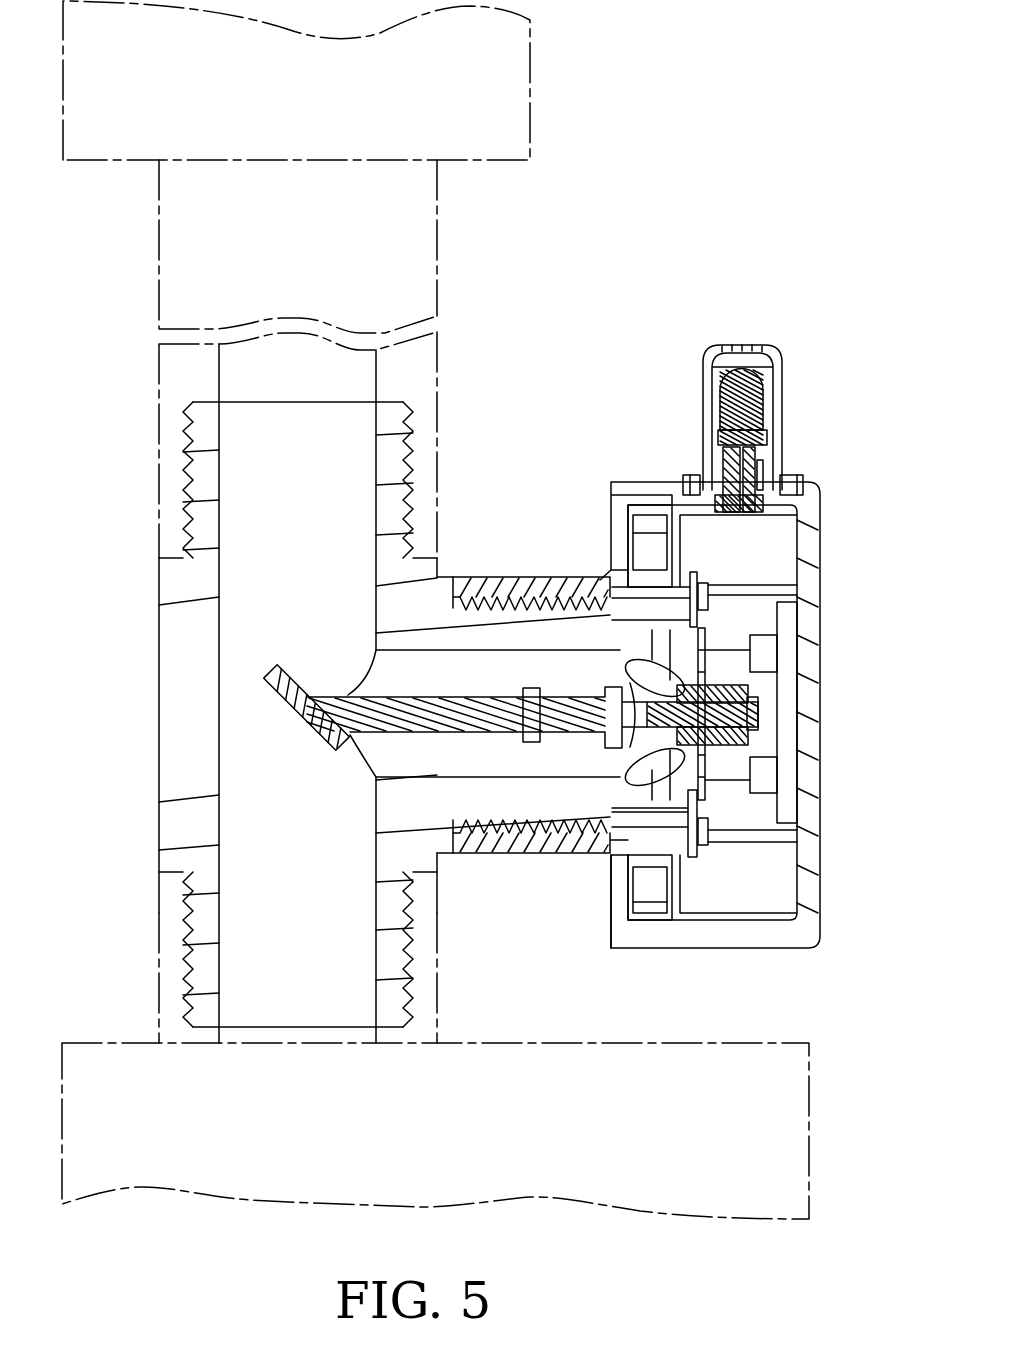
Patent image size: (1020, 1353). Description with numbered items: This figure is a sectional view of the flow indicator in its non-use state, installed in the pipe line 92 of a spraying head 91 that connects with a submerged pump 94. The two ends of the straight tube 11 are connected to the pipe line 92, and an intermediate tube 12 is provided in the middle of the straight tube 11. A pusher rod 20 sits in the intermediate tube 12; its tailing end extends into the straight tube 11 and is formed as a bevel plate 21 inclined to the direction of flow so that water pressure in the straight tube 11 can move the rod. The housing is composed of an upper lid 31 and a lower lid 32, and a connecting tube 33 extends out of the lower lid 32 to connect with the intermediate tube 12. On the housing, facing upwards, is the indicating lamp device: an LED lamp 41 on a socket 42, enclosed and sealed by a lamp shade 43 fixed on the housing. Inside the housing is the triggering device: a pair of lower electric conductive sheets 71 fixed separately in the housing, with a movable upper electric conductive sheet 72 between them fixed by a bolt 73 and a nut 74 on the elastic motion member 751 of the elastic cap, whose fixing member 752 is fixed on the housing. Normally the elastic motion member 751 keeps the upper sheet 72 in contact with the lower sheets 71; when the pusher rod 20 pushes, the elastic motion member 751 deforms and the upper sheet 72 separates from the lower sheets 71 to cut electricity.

The straight tube 11 is at (158, 662).
The intermediate tube 12 is at (437, 803).
The pusher rod 20 is at (465, 690).
The bevel plate 21 is at (283, 697).
The upper lid 31 is at (820, 842).
The lower lid 32 is at (627, 890).
The connecting tube 33 is at (527, 857).
The LED lamp 41 is at (747, 383).
The socket 42 is at (723, 455).
The lamp shade 43 is at (780, 392).
The lower electric conductive sheets 71 is at (694, 572).
The movable upper electric conductive sheet 72 is at (707, 643).
The bolt 73 is at (763, 710).
The nut 74 is at (717, 747).
The elastic motion member 751 is at (667, 745).
The fixing member 752 is at (643, 570).
The spraying head 91 is at (540, 90).
The pipe line 92 is at (445, 292).
The submerged pump 94 is at (655, 1147).